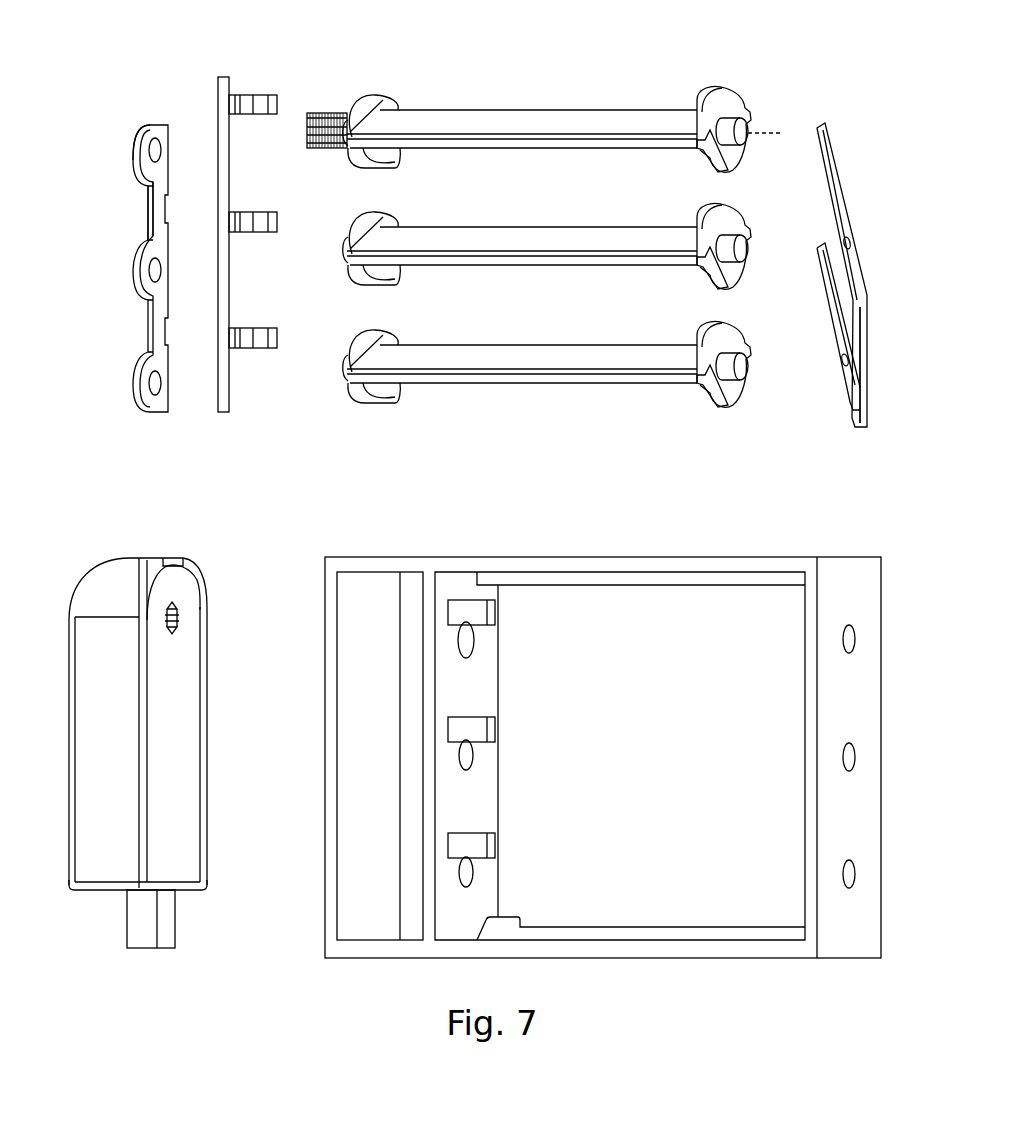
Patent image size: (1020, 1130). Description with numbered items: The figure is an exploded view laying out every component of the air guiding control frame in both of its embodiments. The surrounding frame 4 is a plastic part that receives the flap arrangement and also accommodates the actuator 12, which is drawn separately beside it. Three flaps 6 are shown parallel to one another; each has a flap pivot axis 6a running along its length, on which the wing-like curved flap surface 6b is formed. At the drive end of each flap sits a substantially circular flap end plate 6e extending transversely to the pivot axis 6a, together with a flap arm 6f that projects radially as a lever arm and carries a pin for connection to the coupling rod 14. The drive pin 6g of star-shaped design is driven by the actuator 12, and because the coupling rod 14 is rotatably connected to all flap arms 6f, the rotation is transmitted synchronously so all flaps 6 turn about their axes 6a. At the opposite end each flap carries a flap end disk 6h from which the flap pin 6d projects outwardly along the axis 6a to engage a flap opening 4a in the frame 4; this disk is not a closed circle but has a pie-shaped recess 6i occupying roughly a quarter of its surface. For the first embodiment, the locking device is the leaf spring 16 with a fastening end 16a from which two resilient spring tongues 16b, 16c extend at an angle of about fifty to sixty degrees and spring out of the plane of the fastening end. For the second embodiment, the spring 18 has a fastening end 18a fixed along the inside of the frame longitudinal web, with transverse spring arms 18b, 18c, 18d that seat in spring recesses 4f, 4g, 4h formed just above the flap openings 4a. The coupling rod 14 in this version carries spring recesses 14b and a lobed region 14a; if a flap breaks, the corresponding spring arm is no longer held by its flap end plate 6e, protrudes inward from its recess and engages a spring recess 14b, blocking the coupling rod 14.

The frame 4 is at (630, 722).
The flap opening 4a is at (471, 652).
The spring recess 4f is at (473, 613).
The spring recess 4g is at (472, 729).
The spring recess 4h is at (468, 846).
The flap 6 is at (561, 220).
The flap pivot axis 6a is at (776, 133).
The flap surface 6b is at (476, 120).
The flap pin 6d is at (742, 128).
The flap end plate 6e is at (372, 108).
The flap arm 6f is at (390, 160).
The drive pin 6g is at (340, 112).
The flap end disk 6h is at (724, 104).
The recess 6i is at (722, 160).
The actuator 12 is at (65, 870).
The coupling rod 14 is at (133, 299).
The bracket lobe 14a is at (163, 180).
The spring recess 14b is at (164, 212).
The leaf spring 16 is at (856, 275).
The fastening end 16a is at (861, 350).
The spring tongue 16b is at (843, 223).
The spring tongue 16c is at (842, 350).
The spring 18 is at (234, 245).
The fastening end 18a is at (222, 262).
The spring arm 18b is at (256, 96).
The spring arm 18c is at (256, 214).
The spring arm 18d is at (256, 330).